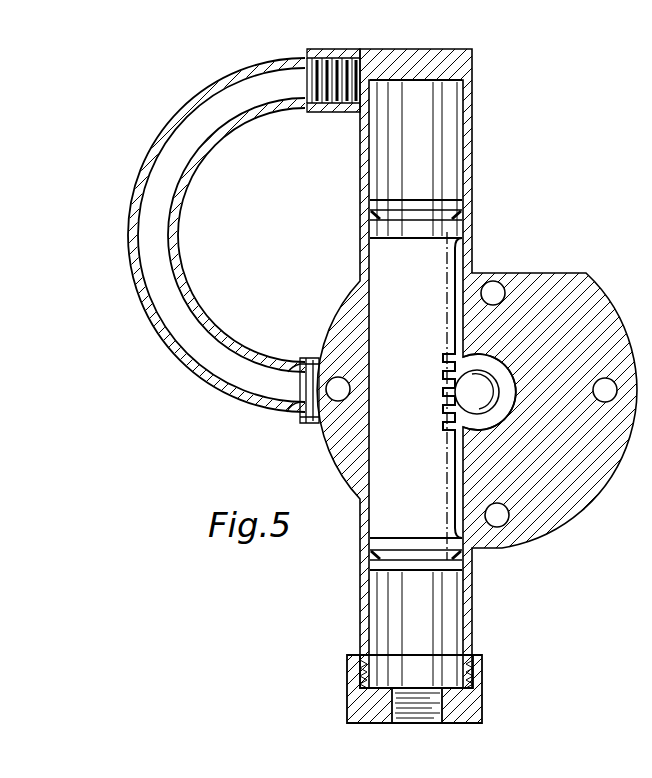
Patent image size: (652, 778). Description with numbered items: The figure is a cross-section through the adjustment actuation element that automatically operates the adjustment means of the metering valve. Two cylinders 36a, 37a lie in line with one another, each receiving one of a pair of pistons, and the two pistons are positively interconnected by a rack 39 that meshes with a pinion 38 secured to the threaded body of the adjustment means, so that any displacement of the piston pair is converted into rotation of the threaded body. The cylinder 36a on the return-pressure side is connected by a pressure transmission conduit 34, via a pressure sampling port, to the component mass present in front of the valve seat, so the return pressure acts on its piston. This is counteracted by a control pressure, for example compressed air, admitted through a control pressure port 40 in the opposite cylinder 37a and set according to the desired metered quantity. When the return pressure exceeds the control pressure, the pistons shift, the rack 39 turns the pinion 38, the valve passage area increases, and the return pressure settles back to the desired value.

The pressure transmission conduit 34 is at (157, 218).
The cylinder 36a is at (450, 157).
The cylinder 37a is at (452, 625).
The pinion 38 is at (485, 398).
The rack 39 is at (461, 276).
The control pressure port 40 is at (423, 726).